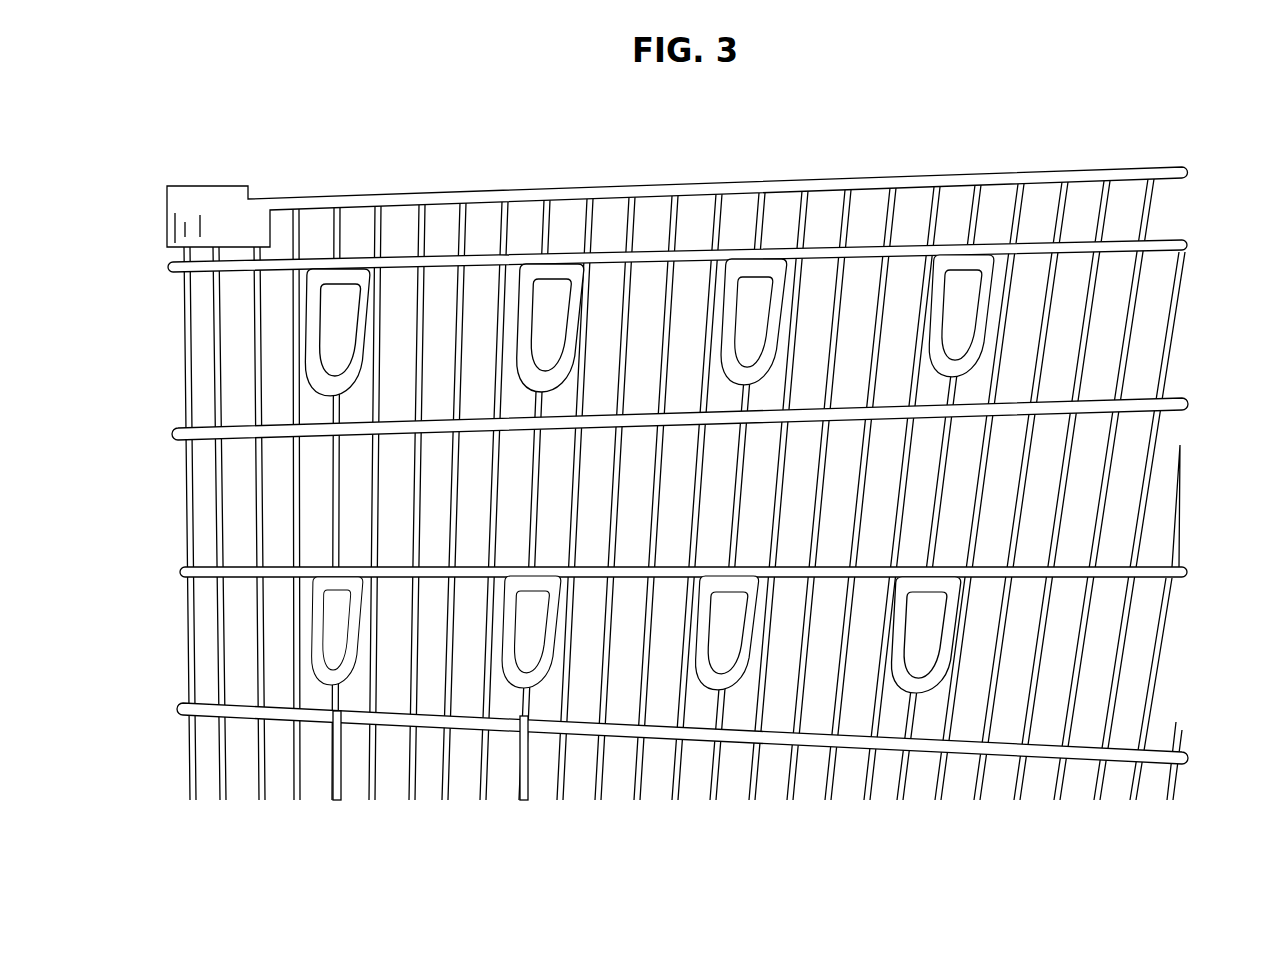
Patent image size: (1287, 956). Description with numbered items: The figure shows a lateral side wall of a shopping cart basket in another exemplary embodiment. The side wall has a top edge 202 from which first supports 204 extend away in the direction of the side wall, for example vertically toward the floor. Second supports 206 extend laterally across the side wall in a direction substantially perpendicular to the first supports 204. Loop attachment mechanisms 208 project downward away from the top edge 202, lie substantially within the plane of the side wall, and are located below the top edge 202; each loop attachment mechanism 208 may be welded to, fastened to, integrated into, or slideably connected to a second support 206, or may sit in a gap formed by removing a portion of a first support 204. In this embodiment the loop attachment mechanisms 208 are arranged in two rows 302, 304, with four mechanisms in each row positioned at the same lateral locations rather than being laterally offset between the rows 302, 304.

The top edge 202 is at (568, 182).
The first supports 204 is at (488, 597).
The second supports 206 is at (1078, 252).
The loop attachment mechanisms 208 is at (735, 683).
The row 302 is at (250, 323).
The row 304 is at (235, 632).